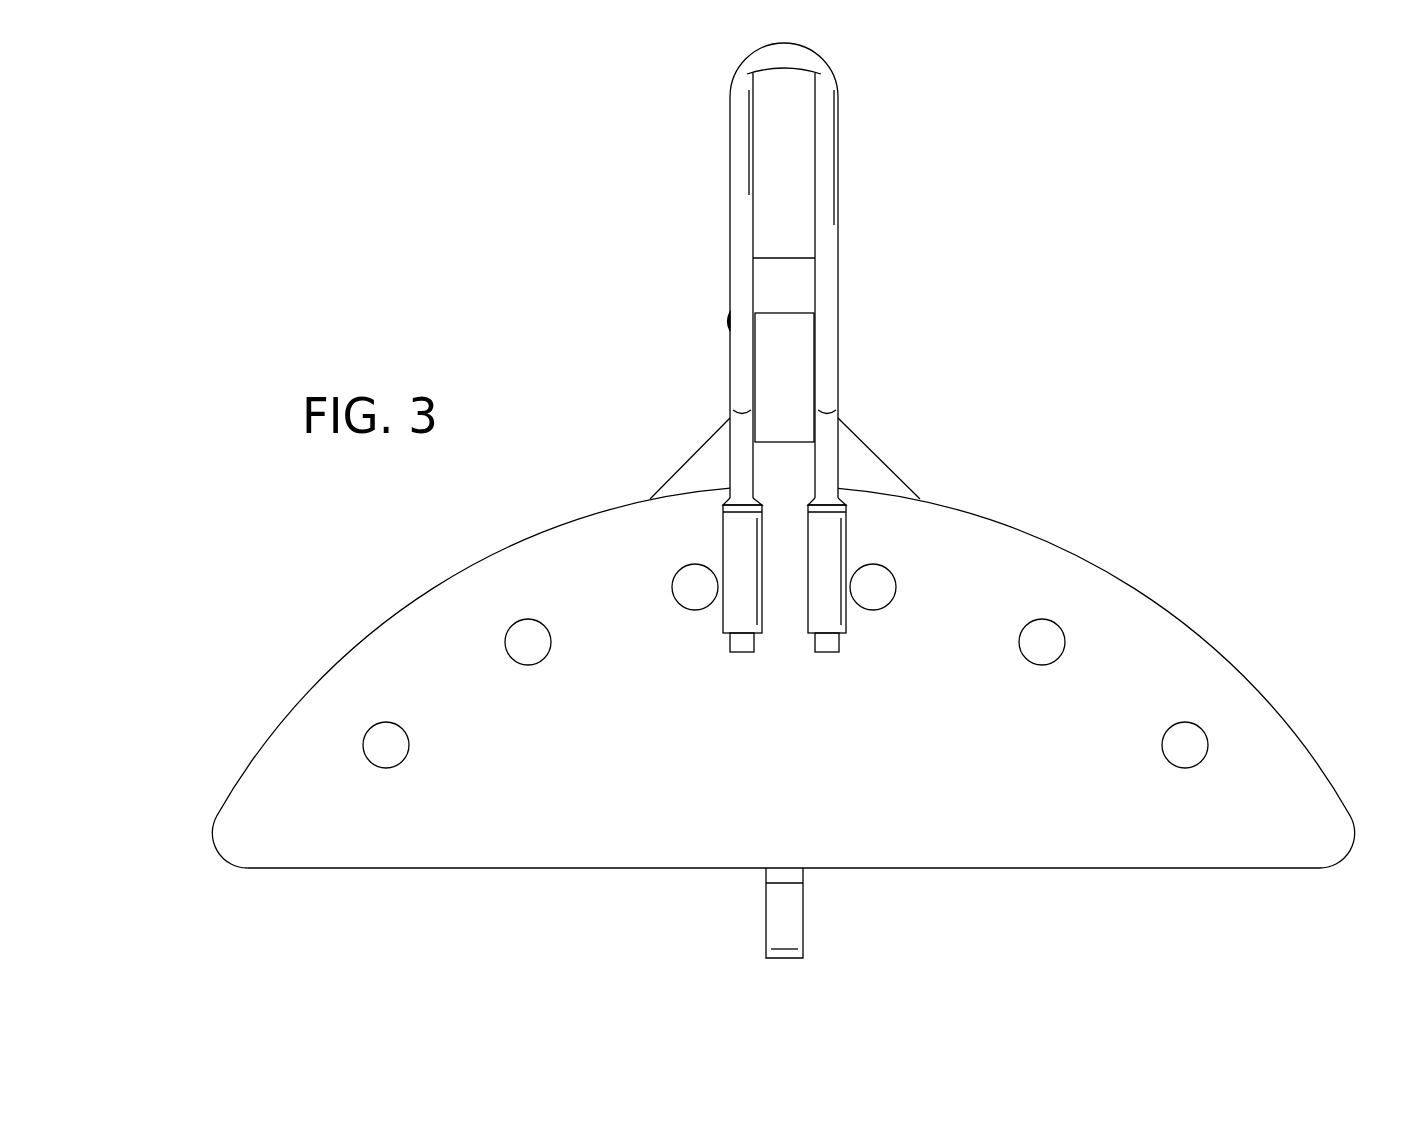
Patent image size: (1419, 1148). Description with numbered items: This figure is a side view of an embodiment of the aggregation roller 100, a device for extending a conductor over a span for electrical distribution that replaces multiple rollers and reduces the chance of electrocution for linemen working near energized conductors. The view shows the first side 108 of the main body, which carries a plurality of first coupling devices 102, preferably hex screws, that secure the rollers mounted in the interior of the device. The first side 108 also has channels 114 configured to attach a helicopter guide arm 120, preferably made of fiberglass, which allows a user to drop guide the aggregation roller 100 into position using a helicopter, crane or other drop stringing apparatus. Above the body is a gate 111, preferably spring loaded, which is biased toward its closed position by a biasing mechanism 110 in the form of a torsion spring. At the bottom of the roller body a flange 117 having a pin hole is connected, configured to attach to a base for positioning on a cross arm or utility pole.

The aggregation roller 100 is at (1016, 227).
The first coupling devices 102 is at (1045, 652).
The first side 108 is at (997, 838).
The biasing mechanism 110 is at (727, 325).
The gate 111 is at (790, 365).
The channels 114 is at (830, 532).
The flange 117 is at (785, 928).
The helicopter guide arm 120 is at (827, 262).